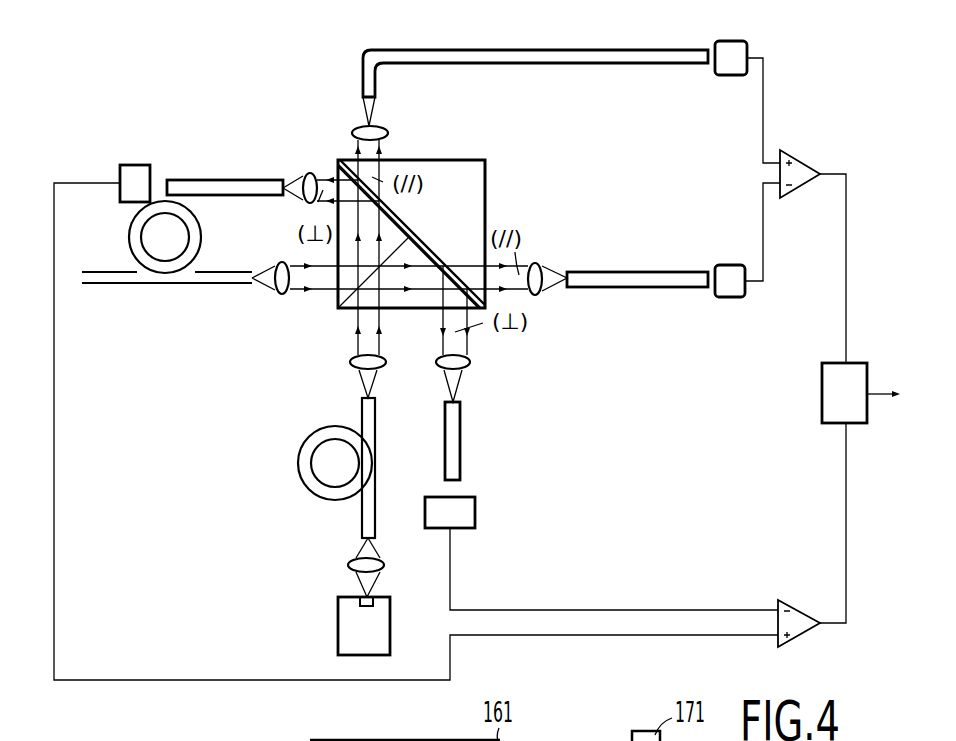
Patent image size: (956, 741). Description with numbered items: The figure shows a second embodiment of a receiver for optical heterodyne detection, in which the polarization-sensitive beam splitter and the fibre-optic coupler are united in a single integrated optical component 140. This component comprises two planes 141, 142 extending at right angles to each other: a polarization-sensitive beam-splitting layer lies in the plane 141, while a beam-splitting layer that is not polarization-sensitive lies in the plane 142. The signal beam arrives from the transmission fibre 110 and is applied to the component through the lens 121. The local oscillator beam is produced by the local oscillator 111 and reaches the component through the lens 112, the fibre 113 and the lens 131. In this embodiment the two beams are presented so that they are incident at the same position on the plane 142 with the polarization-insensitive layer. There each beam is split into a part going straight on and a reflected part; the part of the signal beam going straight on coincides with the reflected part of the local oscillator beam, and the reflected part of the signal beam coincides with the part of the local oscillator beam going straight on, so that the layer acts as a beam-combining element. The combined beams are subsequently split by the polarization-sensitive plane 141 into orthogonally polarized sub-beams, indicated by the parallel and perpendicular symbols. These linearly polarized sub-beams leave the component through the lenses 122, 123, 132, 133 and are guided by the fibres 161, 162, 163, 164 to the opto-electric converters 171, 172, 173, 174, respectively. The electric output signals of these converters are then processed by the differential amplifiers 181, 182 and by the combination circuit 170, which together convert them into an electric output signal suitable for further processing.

The transmission fibre 110 is at (122, 283).
The local oscillator 111 is at (347, 625).
The lens 112 is at (348, 565).
The fibre 113 is at (305, 460).
The lens 121 is at (283, 262).
The lens 122 is at (388, 133).
The lens 123 is at (537, 296).
The lens 131 is at (350, 361).
The lens 132 is at (308, 172).
The lens 133 is at (470, 361).
The integrated optical component 140 is at (467, 193).
The plane 141 is at (435, 252).
The plane 142 is at (350, 278).
The fibre 161 is at (538, 58).
The fibre 162 is at (633, 282).
The fibre 163 is at (217, 187).
The fibre 164 is at (452, 440).
The combination circuit 170 is at (822, 382).
The opto-electric converter 171 is at (727, 48).
The opto-electric converter 172 is at (730, 272).
The opto-electric converter 173 is at (135, 173).
The opto-electric converter 174 is at (470, 515).
The differential amplifier 181 is at (809, 160).
The differential amplifier 182 is at (793, 607).